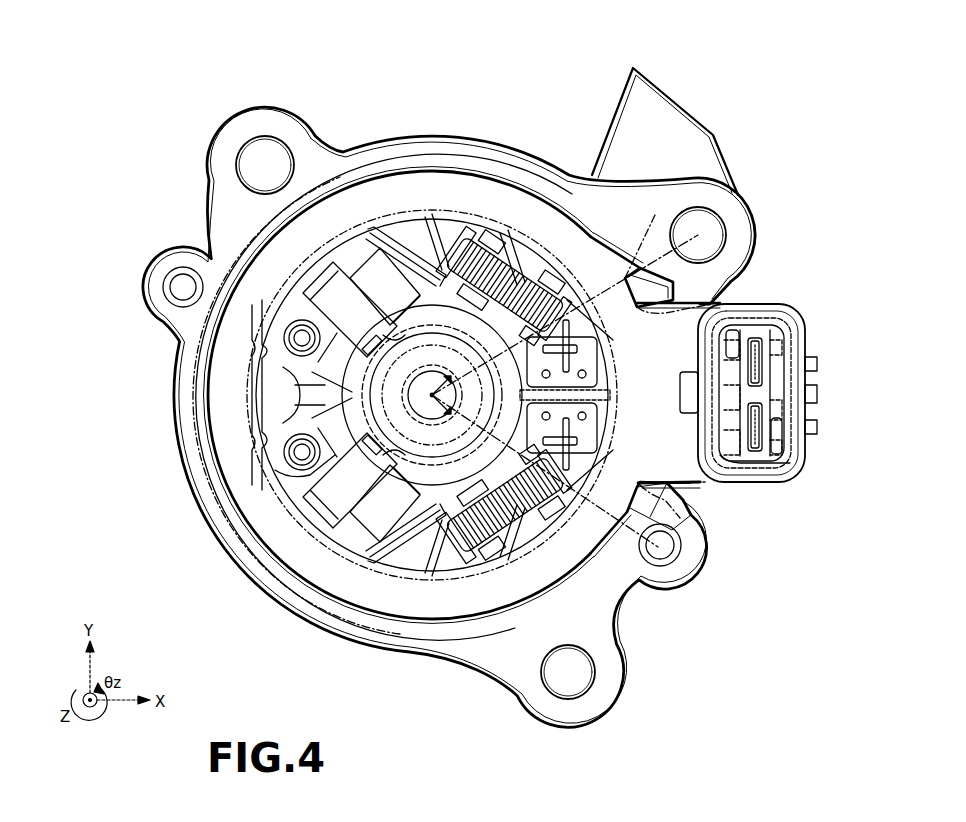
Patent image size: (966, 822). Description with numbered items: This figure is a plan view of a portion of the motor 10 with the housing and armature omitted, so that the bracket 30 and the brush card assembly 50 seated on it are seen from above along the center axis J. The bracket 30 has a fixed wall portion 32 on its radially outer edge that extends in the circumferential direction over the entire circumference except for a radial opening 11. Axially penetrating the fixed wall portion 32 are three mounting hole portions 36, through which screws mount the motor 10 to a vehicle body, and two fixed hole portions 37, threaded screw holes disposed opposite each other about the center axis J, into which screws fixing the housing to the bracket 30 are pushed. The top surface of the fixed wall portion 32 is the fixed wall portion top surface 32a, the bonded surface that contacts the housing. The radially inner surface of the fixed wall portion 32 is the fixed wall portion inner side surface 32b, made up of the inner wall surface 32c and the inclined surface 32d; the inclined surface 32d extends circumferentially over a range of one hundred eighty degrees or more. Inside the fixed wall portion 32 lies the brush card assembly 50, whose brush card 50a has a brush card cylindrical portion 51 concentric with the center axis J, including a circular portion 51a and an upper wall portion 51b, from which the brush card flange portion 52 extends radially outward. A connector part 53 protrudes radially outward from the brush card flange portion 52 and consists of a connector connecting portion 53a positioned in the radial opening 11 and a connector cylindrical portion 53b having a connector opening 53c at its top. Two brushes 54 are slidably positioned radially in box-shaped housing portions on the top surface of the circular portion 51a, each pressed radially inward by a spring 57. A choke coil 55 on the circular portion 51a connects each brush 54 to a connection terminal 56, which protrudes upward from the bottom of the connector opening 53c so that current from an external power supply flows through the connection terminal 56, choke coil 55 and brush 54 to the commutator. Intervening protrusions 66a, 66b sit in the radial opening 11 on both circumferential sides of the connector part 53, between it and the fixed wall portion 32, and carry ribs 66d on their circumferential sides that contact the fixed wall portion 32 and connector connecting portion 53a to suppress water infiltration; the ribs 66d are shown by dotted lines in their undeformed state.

The motor 10 is at (904, 140).
The radial opening 11 is at (687, 487).
The bracket 30 is at (680, 96).
The fixed wall portion 32 is at (622, 627).
The fixed wall portion top surface 32a is at (232, 204).
The fixed wall portion inner side surface 32b is at (399, 446).
The inner wall surface 32c is at (347, 585).
The inclined surface 32d is at (377, 623).
The mounting hole portion 36 is at (276, 140).
The fixed hole portion 37 is at (175, 285).
The brush card assembly 50 is at (809, 393).
The brush card 50a is at (808, 300).
The brush card cylindrical portion 51 is at (441, 458).
The circular portion 51a is at (320, 405).
The upper wall portion 51b is at (560, 450).
The brush card flange portion 52 is at (280, 450).
The connector part 53 is at (819, 414).
The connector connecting portion 53a is at (792, 473).
The connector cylindrical portion 53b is at (815, 428).
The connector opening 53c is at (780, 342).
The brush 54 is at (340, 270).
The choke coil 55 is at (503, 262).
The connection terminal 56 is at (760, 362).
The spring 57 is at (284, 338).
The intervening protrusion 66a is at (684, 517).
The intervening protrusion 66b is at (655, 300).
The rib 66d is at (672, 252).
The center axis J is at (432, 395).